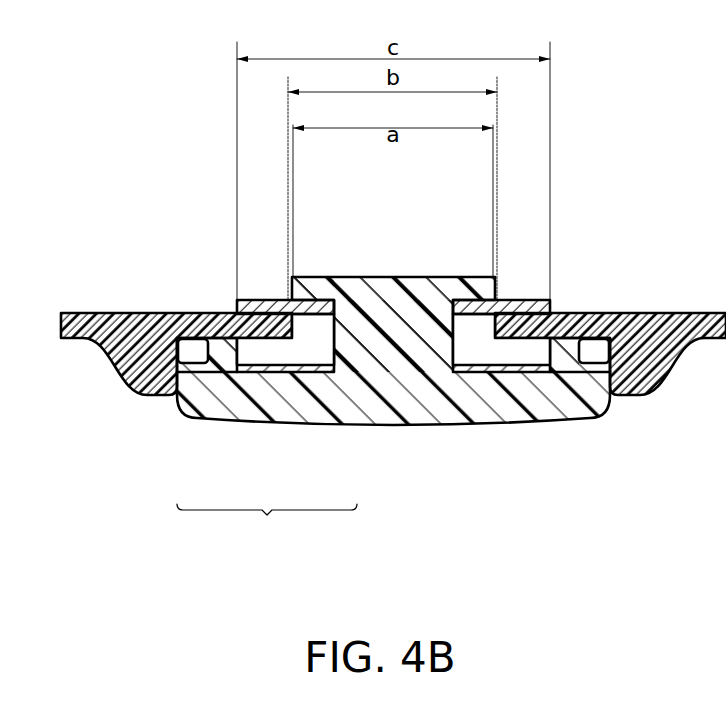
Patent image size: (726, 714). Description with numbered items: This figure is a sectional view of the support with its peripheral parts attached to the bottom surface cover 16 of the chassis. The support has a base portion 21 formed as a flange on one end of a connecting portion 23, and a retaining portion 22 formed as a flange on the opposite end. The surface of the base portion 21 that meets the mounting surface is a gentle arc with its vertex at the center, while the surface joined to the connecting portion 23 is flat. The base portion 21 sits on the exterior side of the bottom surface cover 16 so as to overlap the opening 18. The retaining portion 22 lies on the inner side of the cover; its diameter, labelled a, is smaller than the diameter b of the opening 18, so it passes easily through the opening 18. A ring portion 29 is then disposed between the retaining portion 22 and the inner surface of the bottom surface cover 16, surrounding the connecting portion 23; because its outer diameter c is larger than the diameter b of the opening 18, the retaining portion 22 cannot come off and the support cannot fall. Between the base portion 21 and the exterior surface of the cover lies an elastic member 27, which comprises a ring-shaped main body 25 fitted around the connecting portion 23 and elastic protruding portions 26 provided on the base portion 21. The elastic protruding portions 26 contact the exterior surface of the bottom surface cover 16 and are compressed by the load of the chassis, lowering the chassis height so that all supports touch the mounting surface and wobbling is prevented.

The bottom surface cover 16 is at (140, 323).
The opening 18 is at (320, 290).
The base portion 21 is at (545, 410).
The retaining portion 22 is at (383, 289).
The connecting portion 23 is at (400, 355).
The main body 25 is at (296, 373).
The elastic protruding portions 26 is at (227, 352).
The elastic member 27 is at (267, 524).
The ring portion 29 is at (268, 299).